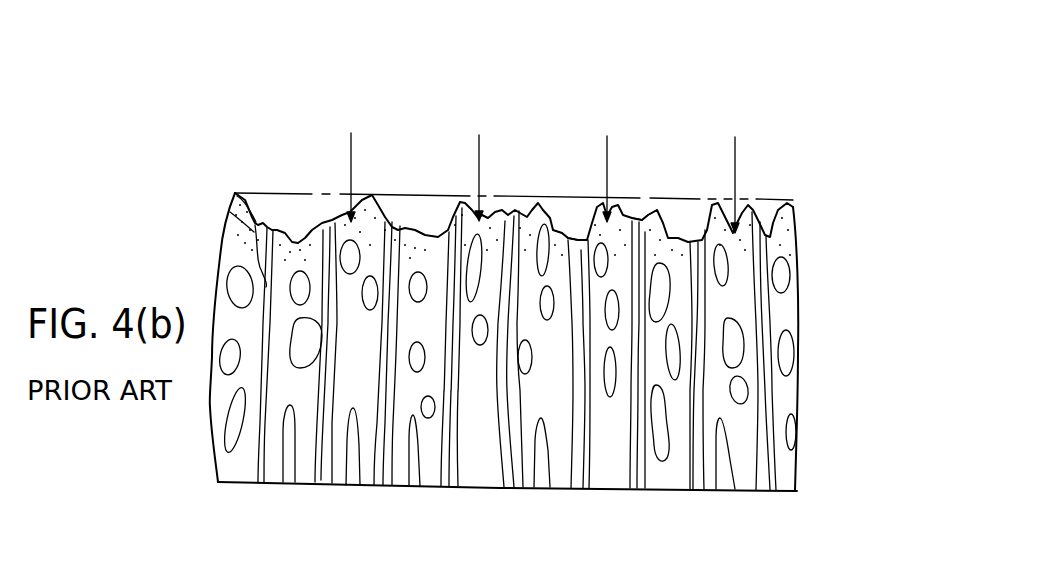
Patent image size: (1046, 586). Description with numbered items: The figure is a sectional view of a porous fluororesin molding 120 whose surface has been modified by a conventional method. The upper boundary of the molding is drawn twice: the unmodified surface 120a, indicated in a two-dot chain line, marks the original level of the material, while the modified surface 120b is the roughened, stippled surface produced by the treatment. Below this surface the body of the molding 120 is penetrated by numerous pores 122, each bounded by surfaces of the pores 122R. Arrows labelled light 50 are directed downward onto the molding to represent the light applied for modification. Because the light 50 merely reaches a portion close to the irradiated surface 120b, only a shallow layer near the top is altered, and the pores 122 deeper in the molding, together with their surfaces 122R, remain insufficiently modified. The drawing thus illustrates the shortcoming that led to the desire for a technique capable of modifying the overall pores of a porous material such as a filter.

The porous fluororesin molding 120 is at (790, 107).
The unmodified surface 120a is at (645, 198).
The modified surface 120b is at (563, 222).
The pores 122 is at (320, 228).
The surfaces of the pores 122R is at (223, 233).
The light 50 is at (352, 162).